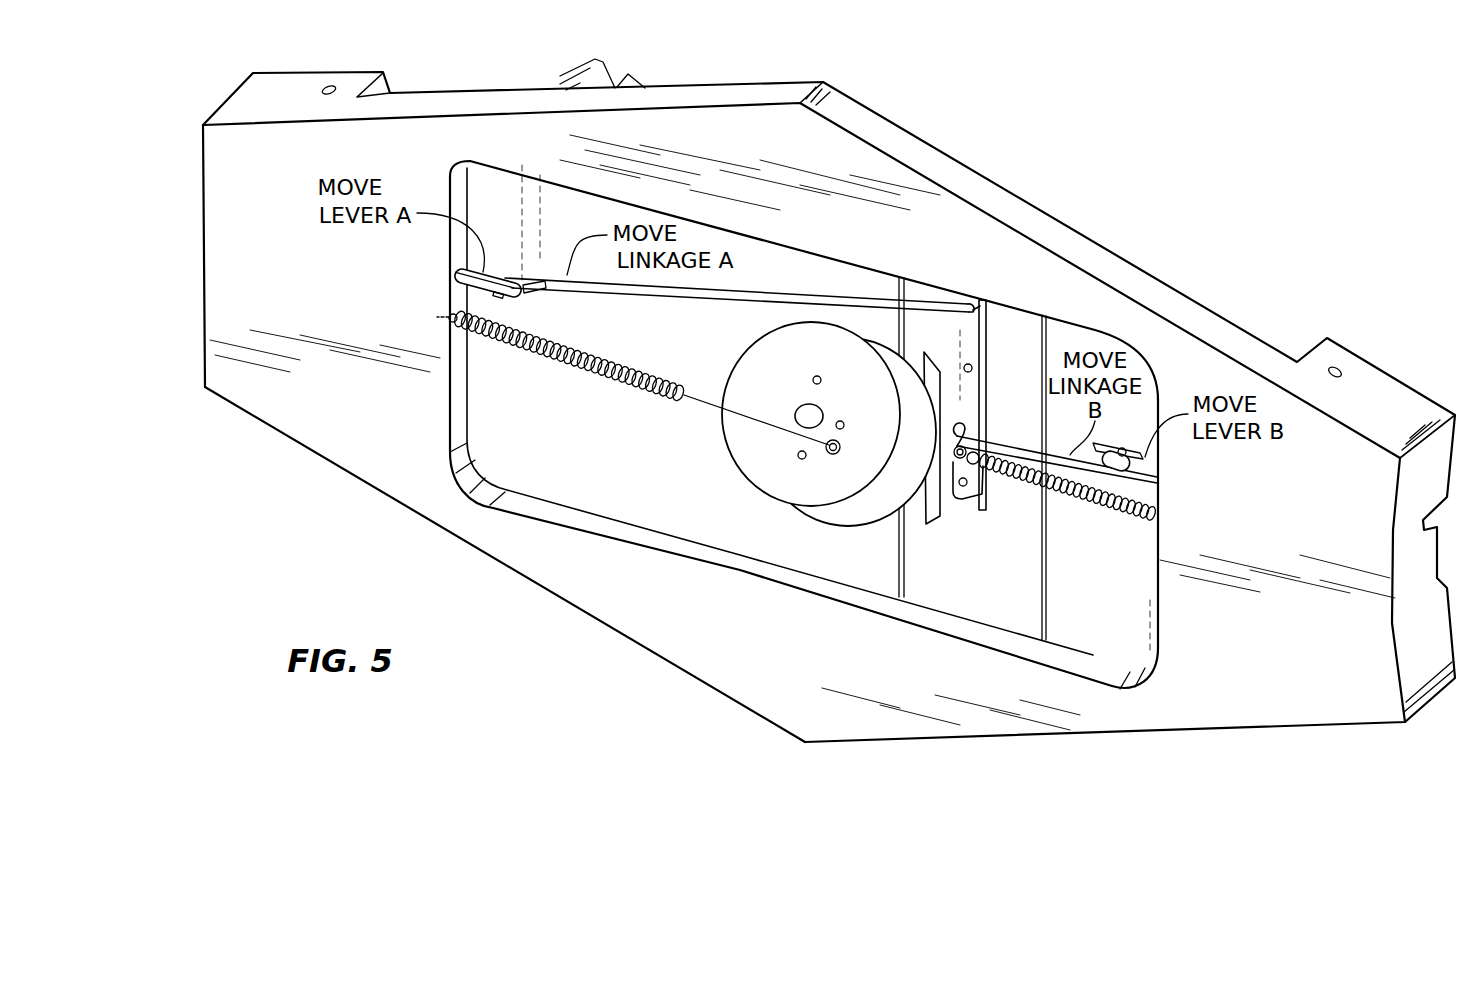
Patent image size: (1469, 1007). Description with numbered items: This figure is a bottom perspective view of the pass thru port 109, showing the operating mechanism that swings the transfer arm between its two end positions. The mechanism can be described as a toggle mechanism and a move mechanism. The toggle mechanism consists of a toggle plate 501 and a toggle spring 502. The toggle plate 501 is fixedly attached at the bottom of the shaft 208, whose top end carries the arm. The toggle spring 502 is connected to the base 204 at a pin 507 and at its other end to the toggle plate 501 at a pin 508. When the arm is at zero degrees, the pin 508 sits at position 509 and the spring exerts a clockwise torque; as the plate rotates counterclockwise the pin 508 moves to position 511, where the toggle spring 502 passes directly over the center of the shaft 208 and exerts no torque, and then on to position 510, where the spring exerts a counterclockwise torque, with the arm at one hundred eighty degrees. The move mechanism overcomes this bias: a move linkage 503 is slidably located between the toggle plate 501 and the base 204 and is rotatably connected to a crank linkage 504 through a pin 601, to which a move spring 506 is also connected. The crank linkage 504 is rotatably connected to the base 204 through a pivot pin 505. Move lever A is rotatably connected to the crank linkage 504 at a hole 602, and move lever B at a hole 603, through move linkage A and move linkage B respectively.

The pass thru port 109 is at (927, 117).
The base 204 is at (295, 428).
The shaft 208 is at (796, 407).
The toggle plate 501 is at (752, 337).
The toggle spring 502 is at (597, 382).
The move linkage 503 is at (925, 512).
The crank linkage 504 is at (965, 352).
The pivot pin 505 is at (971, 370).
The move spring 506 is at (1105, 510).
The pin 507 is at (436, 316).
The pin 508 is at (831, 455).
The position 509 is at (800, 459).
The position 510 is at (824, 378).
The position 511 is at (842, 423).
The pin 601 is at (993, 483).
The hole 602 is at (975, 302).
The hole 603 is at (966, 424).